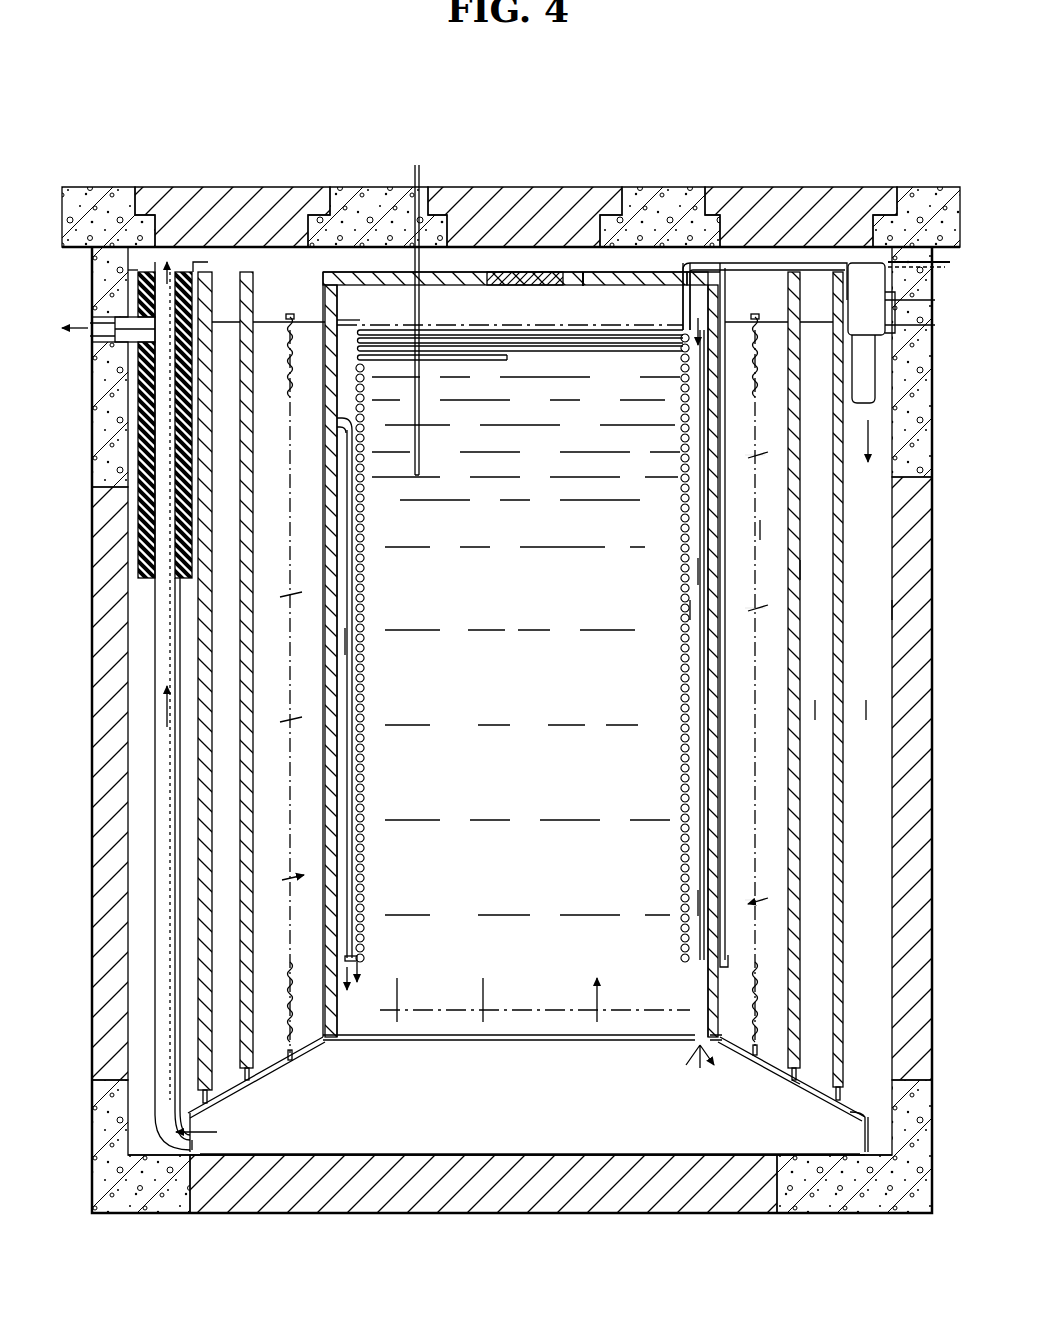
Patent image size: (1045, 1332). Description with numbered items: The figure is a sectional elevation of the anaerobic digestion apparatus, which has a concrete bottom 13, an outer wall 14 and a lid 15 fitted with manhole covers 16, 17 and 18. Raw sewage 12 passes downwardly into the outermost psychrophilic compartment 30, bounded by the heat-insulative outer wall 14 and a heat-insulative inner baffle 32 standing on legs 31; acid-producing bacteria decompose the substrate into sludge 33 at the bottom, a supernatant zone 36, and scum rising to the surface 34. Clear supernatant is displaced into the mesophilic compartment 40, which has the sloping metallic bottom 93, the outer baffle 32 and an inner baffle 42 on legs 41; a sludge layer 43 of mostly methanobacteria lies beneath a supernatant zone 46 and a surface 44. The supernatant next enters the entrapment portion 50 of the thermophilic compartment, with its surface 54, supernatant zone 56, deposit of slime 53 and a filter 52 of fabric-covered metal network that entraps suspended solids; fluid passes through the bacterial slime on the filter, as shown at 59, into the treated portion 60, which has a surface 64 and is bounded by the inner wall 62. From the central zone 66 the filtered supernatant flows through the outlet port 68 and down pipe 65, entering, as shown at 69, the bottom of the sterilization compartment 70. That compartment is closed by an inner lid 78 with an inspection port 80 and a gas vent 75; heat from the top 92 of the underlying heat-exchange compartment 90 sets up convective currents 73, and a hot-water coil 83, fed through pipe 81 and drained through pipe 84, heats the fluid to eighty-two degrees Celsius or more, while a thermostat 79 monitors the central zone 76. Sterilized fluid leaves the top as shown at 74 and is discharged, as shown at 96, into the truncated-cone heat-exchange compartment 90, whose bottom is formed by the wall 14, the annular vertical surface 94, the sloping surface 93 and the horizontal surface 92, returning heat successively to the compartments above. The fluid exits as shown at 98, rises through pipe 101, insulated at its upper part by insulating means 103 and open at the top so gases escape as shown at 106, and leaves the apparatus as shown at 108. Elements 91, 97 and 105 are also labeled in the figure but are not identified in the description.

The raw sewage 12 is at (933, 312).
The bottom 13 is at (418, 1212).
The outer wall 14 is at (95, 1020).
The lid 15 is at (108, 186).
The manhole cover 16 is at (820, 188).
The manhole cover 17 is at (510, 186).
The manhole cover 18 is at (245, 186).
The psychrophilic compartment 30 is at (892, 600).
The legs 31 is at (204, 1094).
The inner baffle 32 is at (210, 860).
The sludge 33 is at (866, 1112).
The surface 34 is at (194, 300).
The supernatant zone 36 is at (852, 650).
The mesophilic compartment 40 is at (813, 562).
The legs 41 is at (246, 1073).
The inner baffle 42 is at (253, 852).
The sludge layer 43 is at (805, 1085).
The surface 44 is at (222, 320).
The supernatant zone 46 is at (803, 650).
The entrapment portion of thermophilic compartment 50 is at (786, 510).
The filter 52 is at (290, 982).
The slime 53 is at (757, 1045).
The surface 54 is at (268, 322).
The supernatant zone 56 is at (758, 650).
The flow through filter slime 59 is at (290, 725).
The treated portion of thermophilic compartment 60 is at (716, 817).
The inner wall 62 is at (328, 668).
The surface 64 is at (311, 322).
The tube 65 is at (358, 912).
The central zone 66 is at (729, 650).
The outlet port 68 is at (330, 422).
The flow into sterilization compartment 69 is at (364, 984).
The sterilization compartment 70 is at (383, 316).
The convective currents 73 is at (590, 1010).
The flow of sterilized fluid 74 is at (680, 340).
The gas vent 75 is at (586, 286).
The central zone 76 is at (503, 590).
The inner lid 78 is at (452, 286).
The thermostat 79 is at (421, 175).
The inspection port 80 is at (528, 286).
The hot water inlet pipe 81 is at (688, 264).
The hot-water coil 83 is at (518, 348).
The cooled water outlet pipe 84 is at (727, 934).
The heat-exchange compartment 90 is at (620, 1142).
The floor surface 91 is at (382, 1155).
The top of heat-exchange compartment 92 is at (405, 1042).
The sloping surface 93 is at (305, 1062).
The vertical surface 94 is at (192, 1148).
The discharge into heat-exchange compartment 96 is at (697, 1062).
The chamber 97 is at (536, 1102).
The exit flow from heat-exchange compartment 98 is at (205, 1130).
The pipe 101 is at (155, 628).
The insulating means 103 is at (145, 580).
The riser pipe 105 is at (166, 712).
The gas escape 106 is at (163, 275).
The exit flow 108 is at (92, 342).